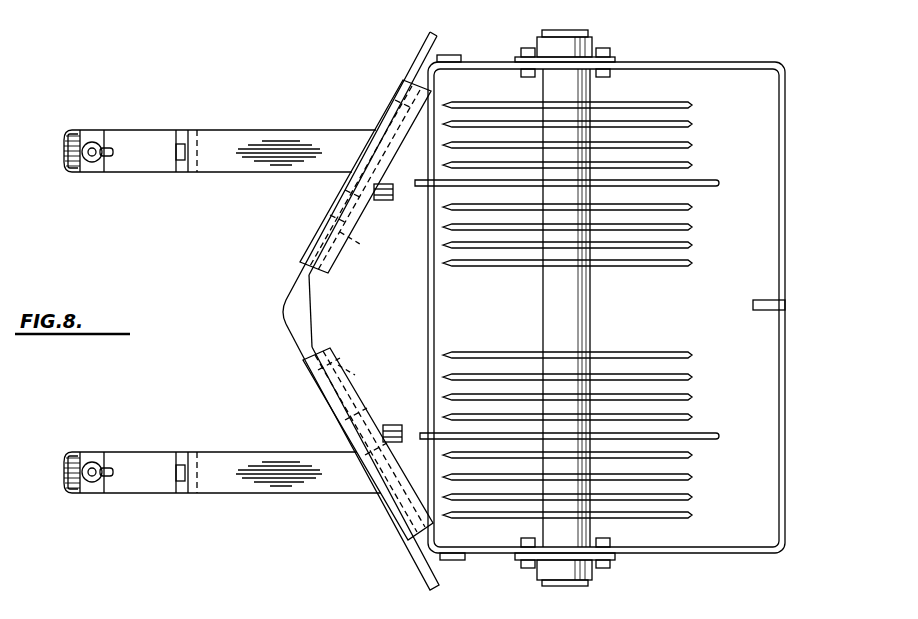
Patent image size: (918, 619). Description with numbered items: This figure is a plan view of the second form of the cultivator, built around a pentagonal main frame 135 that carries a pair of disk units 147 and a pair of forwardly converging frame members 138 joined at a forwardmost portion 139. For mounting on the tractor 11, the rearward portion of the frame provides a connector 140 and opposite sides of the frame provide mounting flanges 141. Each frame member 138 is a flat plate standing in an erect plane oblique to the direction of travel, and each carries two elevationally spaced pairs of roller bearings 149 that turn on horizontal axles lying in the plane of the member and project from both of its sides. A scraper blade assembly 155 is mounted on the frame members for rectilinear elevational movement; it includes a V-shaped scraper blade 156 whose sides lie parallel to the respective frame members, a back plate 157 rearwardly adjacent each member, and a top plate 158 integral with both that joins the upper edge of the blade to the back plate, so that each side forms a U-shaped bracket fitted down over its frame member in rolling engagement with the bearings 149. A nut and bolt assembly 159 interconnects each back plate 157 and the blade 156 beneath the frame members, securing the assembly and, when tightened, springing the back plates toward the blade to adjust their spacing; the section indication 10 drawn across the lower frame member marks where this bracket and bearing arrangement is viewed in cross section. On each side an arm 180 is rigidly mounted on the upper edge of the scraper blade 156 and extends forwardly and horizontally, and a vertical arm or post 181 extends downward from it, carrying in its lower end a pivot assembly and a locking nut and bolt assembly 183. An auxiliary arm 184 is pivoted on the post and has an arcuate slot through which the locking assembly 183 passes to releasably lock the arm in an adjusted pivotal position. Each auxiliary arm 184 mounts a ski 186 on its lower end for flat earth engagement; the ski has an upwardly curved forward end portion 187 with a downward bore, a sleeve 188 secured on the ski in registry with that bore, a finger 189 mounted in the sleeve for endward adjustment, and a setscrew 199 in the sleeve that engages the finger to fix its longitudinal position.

The section line 10- 10 is at (443, 487).
The tractor 11 is at (175, 535).
The main frame 135 is at (794, 416).
The frame members 138 is at (421, 556).
The forwardmost portion 139 is at (316, 316).
The connector 140 is at (770, 300).
The mounting flanges 141 is at (452, 55).
The disk units 147 is at (698, 142).
The roller bearing 149 is at (395, 99).
The scraper blade assembly 155 is at (284, 291).
The scraper blade 156 is at (293, 348).
The back plate 157 is at (352, 236).
The top plate 158 is at (404, 96).
The nut and bolt assembly 159 is at (393, 198).
The arm 180 is at (295, 130).
The vertical arm or post 181 is at (203, 160).
The locking nut and bolt assembly 183 is at (178, 142).
The auxiliary arm 184 is at (190, 140).
The ski 186 is at (162, 163).
The forward end portion 187 is at (70, 150).
The sleeve 188 is at (96, 142).
The finger 189 is at (103, 160).
The setscrew 199 is at (70, 168).